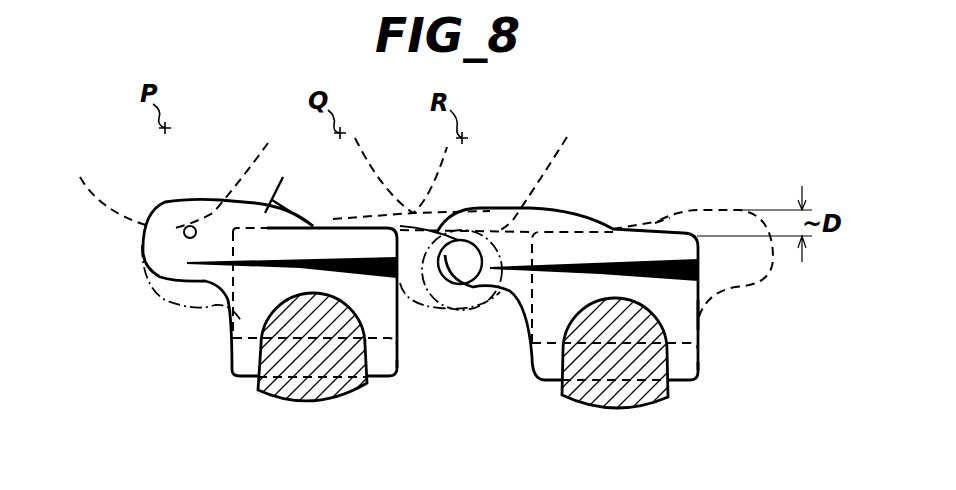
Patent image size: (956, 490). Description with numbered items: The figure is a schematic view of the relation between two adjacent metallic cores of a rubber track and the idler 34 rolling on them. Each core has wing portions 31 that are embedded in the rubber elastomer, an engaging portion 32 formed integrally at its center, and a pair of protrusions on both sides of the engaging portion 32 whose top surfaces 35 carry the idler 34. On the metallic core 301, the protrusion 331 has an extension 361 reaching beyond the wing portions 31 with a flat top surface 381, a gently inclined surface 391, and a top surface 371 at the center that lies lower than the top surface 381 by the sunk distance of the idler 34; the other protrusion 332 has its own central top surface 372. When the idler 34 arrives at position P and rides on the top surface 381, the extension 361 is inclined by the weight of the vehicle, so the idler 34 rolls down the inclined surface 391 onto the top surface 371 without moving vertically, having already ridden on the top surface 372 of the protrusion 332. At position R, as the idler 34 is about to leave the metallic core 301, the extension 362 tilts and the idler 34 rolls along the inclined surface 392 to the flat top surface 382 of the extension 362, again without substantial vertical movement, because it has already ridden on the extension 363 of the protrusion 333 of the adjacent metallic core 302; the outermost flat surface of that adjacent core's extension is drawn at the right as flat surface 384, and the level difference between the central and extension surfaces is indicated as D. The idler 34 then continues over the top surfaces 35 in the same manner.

The metallic core 301 is at (242, 395).
The adjacent metallic core 302 is at (570, 410).
The wing portion 31 is at (397, 378).
The engaging portion 32 is at (330, 397).
The protrusion 331 is at (238, 328).
The other protrusion 332 is at (402, 290).
The protrusion of adjacent core 333 is at (711, 328).
The idler 34 is at (85, 183).
The top surface 35 is at (598, 225).
The extension 361 is at (158, 298).
The extension 362 is at (494, 262).
The extension 363 is at (475, 298).
The top surface at the center 371 is at (360, 230).
The top surface at the center 372 is at (354, 219).
The top surface of extension 381 is at (189, 226).
The flat top surface of extension 382 is at (445, 222).
The fourth lobe 384 is at (728, 210).
The inclined surface 391 is at (289, 187).
The inclined surface 392 is at (668, 226).